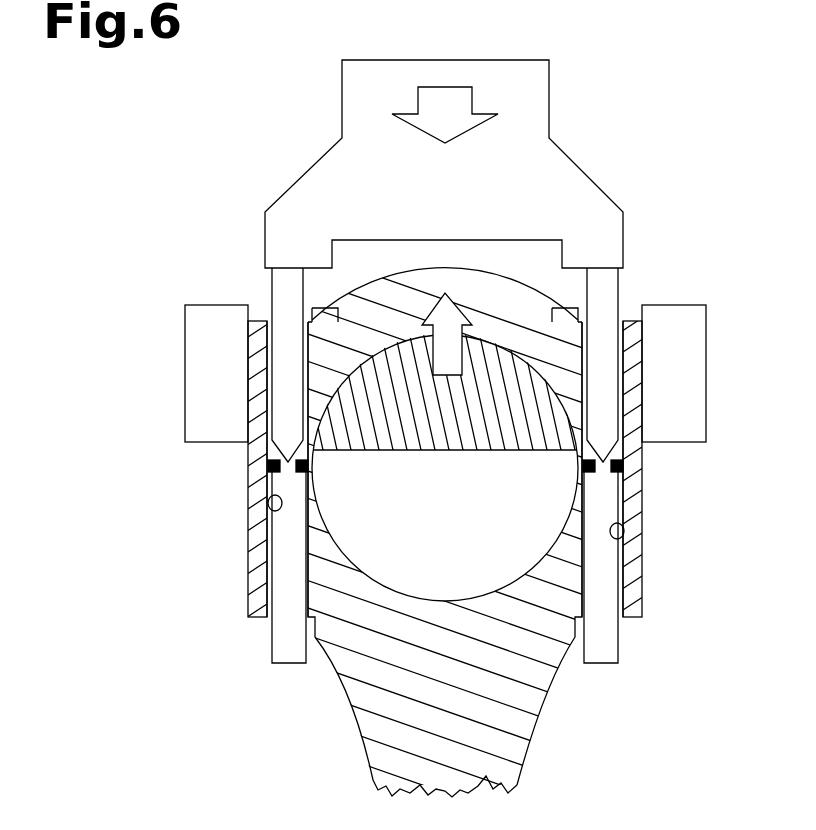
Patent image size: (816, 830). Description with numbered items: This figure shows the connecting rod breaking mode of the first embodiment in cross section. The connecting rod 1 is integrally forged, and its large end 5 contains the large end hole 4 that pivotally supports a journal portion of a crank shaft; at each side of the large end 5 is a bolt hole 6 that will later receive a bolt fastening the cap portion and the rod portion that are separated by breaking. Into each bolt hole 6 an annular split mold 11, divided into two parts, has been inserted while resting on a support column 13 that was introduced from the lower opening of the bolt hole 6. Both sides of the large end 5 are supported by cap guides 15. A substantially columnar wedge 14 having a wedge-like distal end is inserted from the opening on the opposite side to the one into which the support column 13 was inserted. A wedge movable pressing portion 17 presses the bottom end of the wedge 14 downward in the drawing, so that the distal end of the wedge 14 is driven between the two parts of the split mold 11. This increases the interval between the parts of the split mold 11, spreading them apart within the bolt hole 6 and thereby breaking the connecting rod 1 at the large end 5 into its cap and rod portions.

The connecting rod 1 is at (353, 730).
The large end hole 4 is at (535, 563).
The large end 5 is at (495, 273).
The bolt hole 6 is at (265, 511).
The split mold 11 is at (268, 470).
The support column 13 is at (272, 640).
The wedge 14 is at (268, 294).
The cap guide 15 is at (185, 377).
The wedge movable pressing portion 17 is at (598, 184).